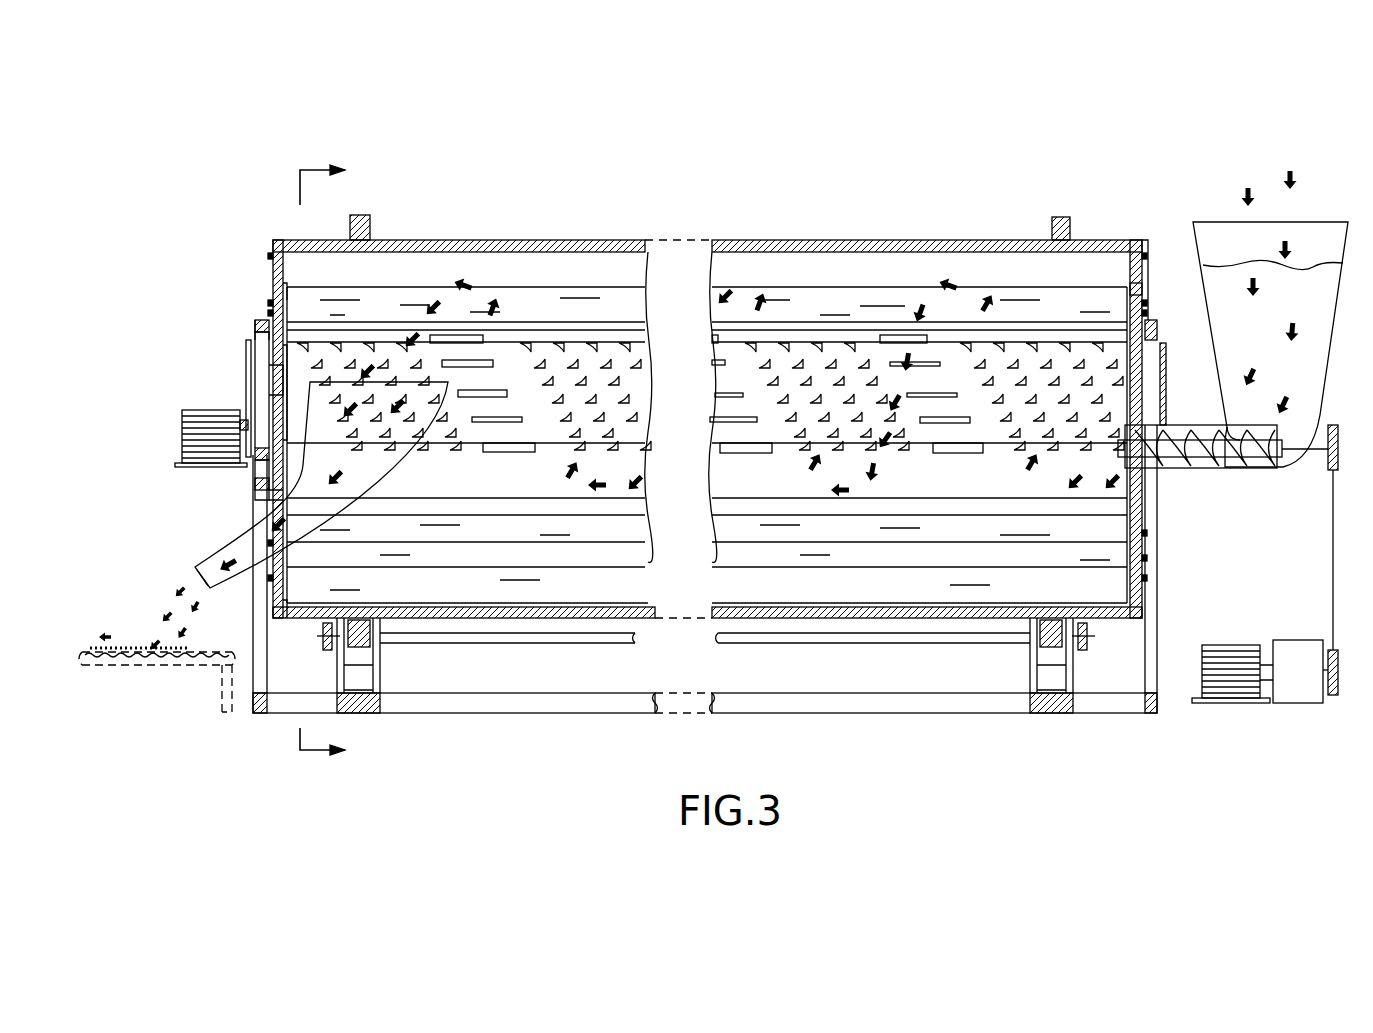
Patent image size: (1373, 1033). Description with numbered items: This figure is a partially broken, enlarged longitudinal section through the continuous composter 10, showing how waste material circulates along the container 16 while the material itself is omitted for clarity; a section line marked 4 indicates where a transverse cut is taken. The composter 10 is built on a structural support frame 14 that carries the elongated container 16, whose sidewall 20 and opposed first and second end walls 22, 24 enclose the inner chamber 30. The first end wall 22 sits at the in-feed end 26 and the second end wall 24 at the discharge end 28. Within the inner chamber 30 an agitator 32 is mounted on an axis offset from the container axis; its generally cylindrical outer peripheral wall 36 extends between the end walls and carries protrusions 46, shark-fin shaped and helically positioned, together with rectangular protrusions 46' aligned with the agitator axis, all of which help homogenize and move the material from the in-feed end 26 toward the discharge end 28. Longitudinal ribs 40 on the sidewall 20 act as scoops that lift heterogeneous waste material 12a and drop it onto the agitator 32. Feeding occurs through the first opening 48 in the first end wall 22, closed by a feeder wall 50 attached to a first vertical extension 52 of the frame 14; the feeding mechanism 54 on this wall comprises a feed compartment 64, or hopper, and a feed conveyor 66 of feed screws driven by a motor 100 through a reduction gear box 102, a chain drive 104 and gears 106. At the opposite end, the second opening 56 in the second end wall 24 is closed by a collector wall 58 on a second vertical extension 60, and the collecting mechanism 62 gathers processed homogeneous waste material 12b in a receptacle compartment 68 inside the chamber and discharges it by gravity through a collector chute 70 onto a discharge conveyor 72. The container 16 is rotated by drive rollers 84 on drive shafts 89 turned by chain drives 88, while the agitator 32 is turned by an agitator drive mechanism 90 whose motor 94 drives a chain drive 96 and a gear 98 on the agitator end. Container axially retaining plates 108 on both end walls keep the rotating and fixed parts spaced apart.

The continuous composter 10 is at (447, 138).
The heterogeneous waste material 12a is at (1302, 268).
The homogeneous waste material 12b is at (140, 648).
The structural support frame 14 is at (765, 710).
The container 16 is at (563, 220).
The sidewall 20 is at (600, 240).
The first end wall 22 is at (1143, 248).
The second end wall 24 is at (275, 618).
The in-feed end 26 is at (1195, 170).
The discharge end 28 is at (232, 218).
The inner chamber 30 is at (1010, 480).
The agitator 32 is at (268, 348).
The outer peripheral wall 36 is at (268, 378).
The longitudinal ribs 40 is at (965, 530).
The protrusions 46 is at (710, 412).
The protrusions 46' is at (733, 471).
The first opening 48 is at (1146, 293).
The feeder wall 50 is at (1142, 365).
The first vertical extension 52 is at (1152, 623).
The feeding mechanism 54 is at (1303, 487).
The second opening 56 is at (278, 288).
The collector wall 58 is at (275, 497).
The second vertical extension 60 is at (258, 486).
The collecting mechanism 62 is at (241, 603).
The feed compartment 64 is at (1225, 392).
The feed conveyor 66 is at (1218, 450).
The receptacle compartment 68 is at (385, 470).
The collector chute 70 is at (218, 548).
The discharge conveyor 72 is at (192, 668).
The drive rollers 84 is at (358, 680).
The chain drives 88 is at (327, 652).
The drive shafts 89 is at (837, 638).
The agitator drive mechanism 90 is at (150, 440).
The motor 94 is at (215, 425).
The chain drive 96 is at (258, 338).
The gear 98 is at (247, 378).
The motor 100 is at (1235, 648).
The reduction gear box 102 is at (1305, 700).
The chain drive 104 is at (1330, 612).
The gears 106 is at (1334, 428).
The container axially retaining plates 108 is at (268, 250).
The section line 4- 4 is at (300, 464).